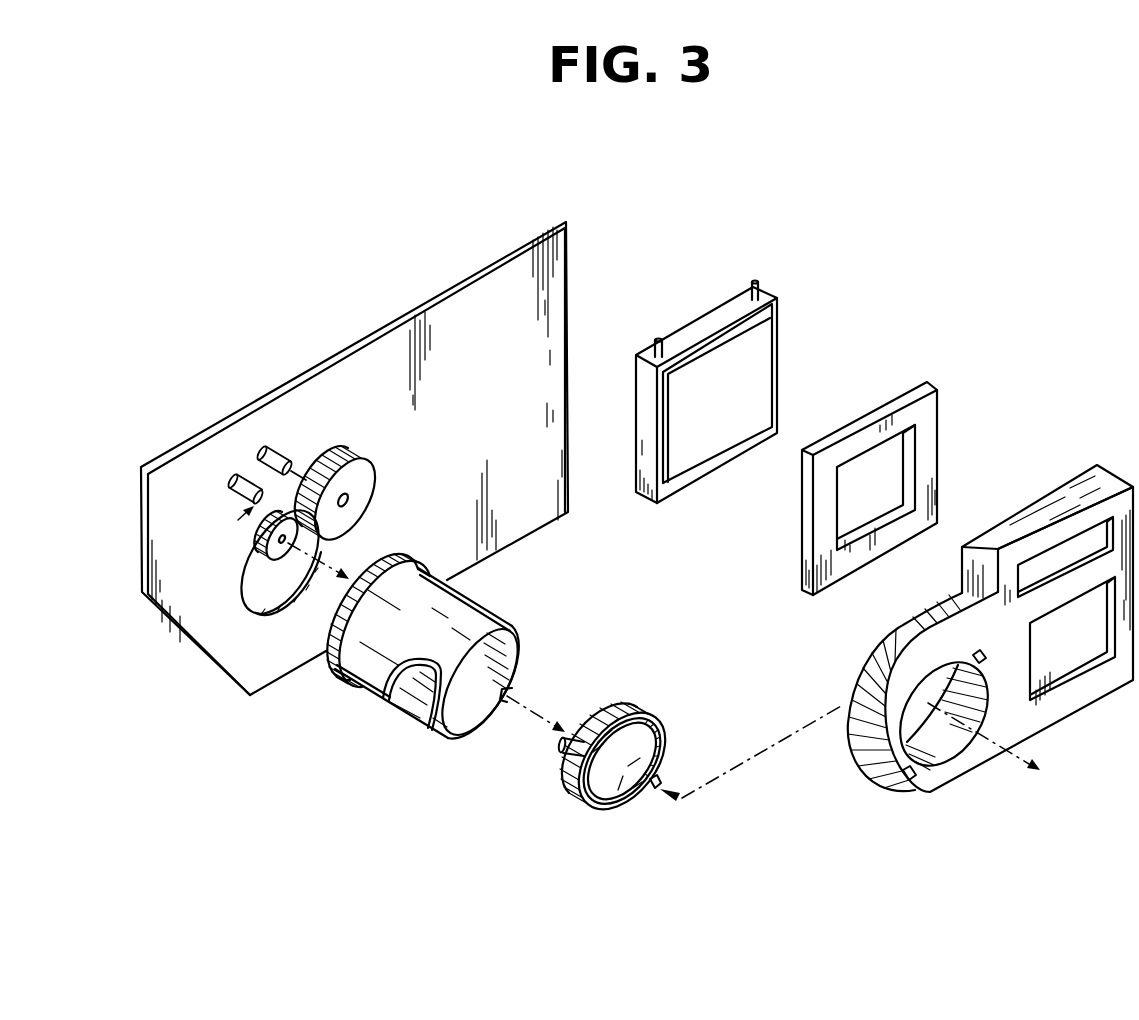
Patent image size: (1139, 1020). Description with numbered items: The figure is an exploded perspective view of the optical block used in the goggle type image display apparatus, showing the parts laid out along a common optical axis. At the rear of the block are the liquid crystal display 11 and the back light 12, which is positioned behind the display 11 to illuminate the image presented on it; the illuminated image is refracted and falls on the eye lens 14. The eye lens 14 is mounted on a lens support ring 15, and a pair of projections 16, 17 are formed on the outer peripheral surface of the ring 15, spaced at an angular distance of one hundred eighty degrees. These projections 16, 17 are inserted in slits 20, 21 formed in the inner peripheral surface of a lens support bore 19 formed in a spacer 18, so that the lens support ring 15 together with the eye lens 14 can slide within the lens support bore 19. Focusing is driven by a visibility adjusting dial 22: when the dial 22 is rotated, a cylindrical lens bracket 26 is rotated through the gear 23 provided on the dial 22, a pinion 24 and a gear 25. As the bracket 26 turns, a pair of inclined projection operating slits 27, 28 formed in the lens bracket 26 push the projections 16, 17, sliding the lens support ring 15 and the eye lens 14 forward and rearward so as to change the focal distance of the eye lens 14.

The liquid crystal display 11 is at (940, 444).
The back light 12 is at (780, 342).
The eye lens 14 is at (619, 808).
The lens support ring 15 is at (577, 803).
The projection 16 is at (561, 745).
The projection 17 is at (656, 790).
The spacer 18 is at (869, 746).
The lens support bore 19 is at (950, 743).
The slit 20 is at (912, 782).
The slit 21 is at (987, 658).
The visibility adjusting dial 22 is at (348, 456).
The gear 23 is at (323, 458).
The pinion 24 is at (276, 508).
The gear 25 is at (333, 662).
The cylindrical lens bracket 26 is at (357, 677).
The inclined projection operating slit 27 is at (382, 695).
The inclined projection operating slit 28 is at (488, 663).